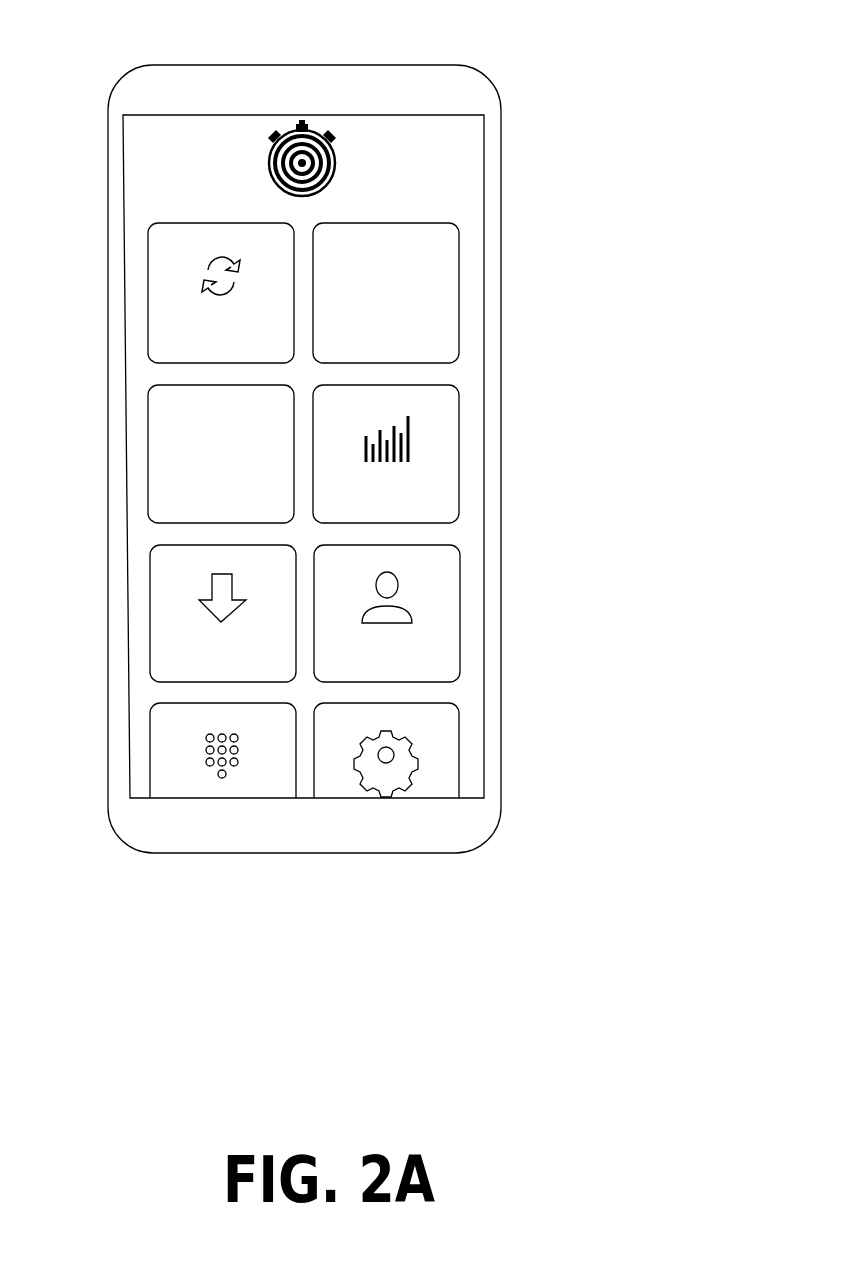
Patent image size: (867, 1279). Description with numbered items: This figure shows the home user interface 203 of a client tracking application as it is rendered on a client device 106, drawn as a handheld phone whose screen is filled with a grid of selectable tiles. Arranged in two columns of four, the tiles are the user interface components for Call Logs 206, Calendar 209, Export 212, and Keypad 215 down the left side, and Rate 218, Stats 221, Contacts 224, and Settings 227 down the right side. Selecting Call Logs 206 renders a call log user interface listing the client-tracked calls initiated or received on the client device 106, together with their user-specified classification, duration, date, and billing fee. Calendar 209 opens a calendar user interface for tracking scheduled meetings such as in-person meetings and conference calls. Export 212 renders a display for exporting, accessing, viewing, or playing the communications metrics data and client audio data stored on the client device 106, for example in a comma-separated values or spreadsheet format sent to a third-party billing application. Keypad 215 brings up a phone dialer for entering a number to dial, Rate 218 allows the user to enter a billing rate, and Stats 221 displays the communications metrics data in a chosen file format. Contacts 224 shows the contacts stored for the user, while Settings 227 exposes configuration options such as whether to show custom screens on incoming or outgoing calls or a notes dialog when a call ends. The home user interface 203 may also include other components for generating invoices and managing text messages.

The client device 106 is at (453, 66).
The home user interface 203 is at (484, 163).
The Call Logs 206 is at (148, 230).
The Calendar 209 is at (148, 392).
The Export 212 is at (150, 553).
The Keypad 215 is at (150, 713).
The Rate 218 is at (459, 235).
The Stats icon 221 is at (459, 397).
The Contacts 224 is at (459, 558).
The Settings 227 is at (459, 733).